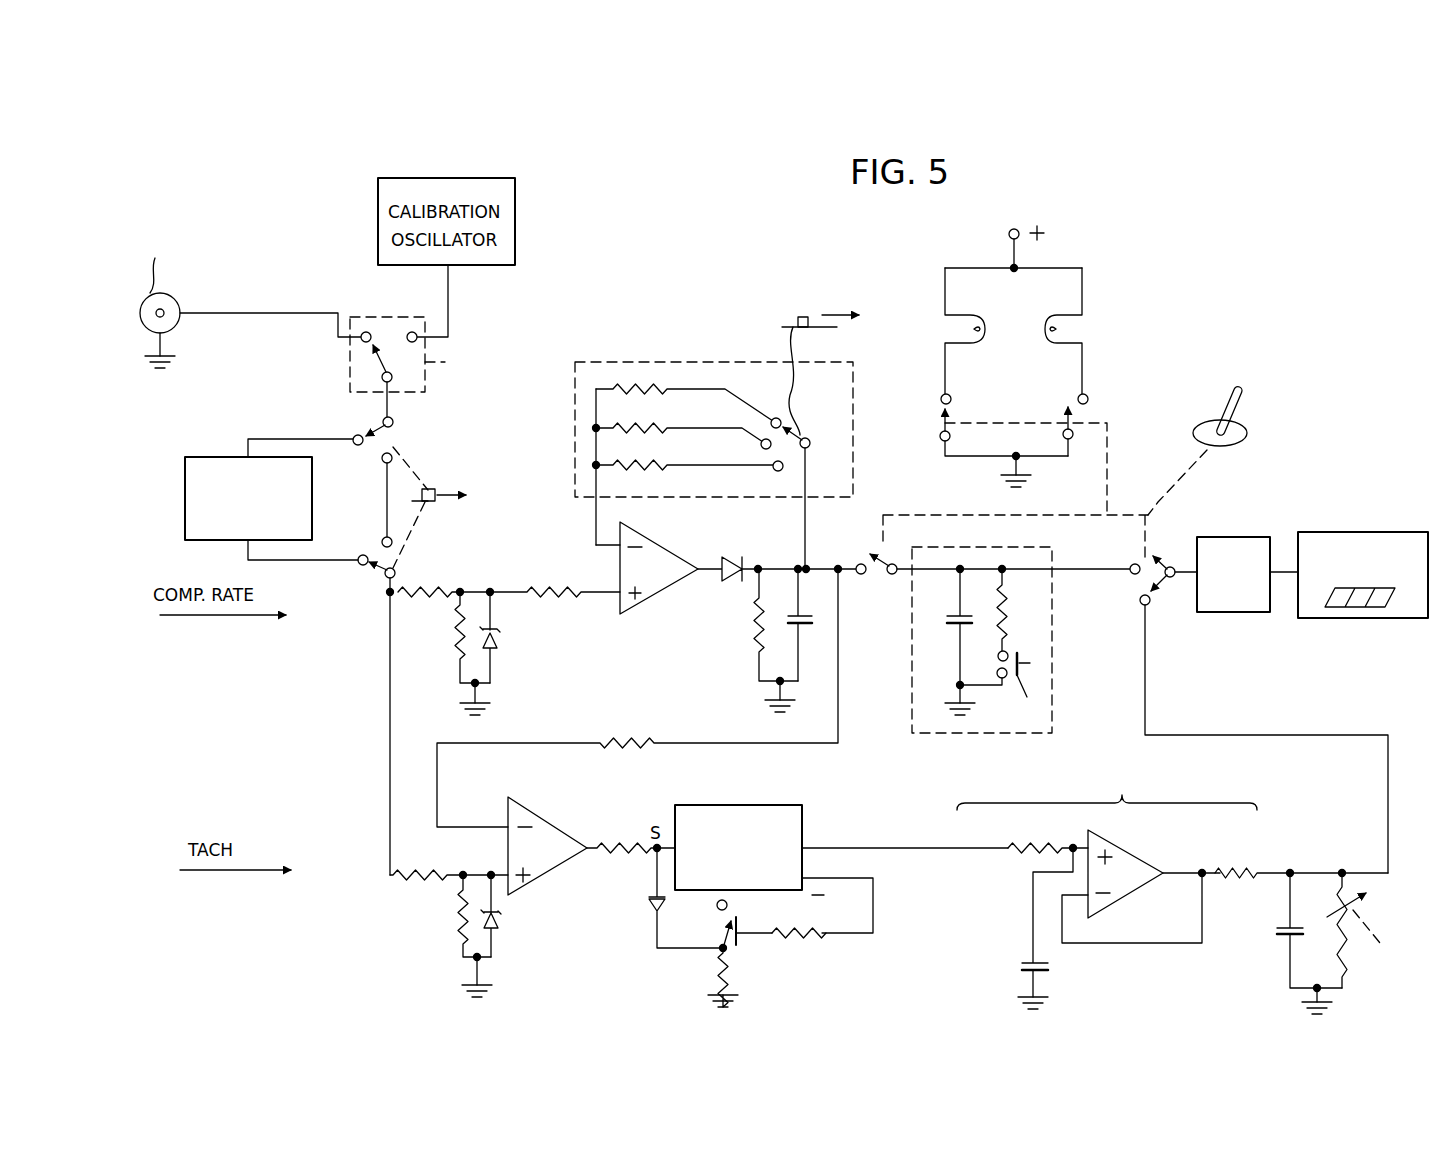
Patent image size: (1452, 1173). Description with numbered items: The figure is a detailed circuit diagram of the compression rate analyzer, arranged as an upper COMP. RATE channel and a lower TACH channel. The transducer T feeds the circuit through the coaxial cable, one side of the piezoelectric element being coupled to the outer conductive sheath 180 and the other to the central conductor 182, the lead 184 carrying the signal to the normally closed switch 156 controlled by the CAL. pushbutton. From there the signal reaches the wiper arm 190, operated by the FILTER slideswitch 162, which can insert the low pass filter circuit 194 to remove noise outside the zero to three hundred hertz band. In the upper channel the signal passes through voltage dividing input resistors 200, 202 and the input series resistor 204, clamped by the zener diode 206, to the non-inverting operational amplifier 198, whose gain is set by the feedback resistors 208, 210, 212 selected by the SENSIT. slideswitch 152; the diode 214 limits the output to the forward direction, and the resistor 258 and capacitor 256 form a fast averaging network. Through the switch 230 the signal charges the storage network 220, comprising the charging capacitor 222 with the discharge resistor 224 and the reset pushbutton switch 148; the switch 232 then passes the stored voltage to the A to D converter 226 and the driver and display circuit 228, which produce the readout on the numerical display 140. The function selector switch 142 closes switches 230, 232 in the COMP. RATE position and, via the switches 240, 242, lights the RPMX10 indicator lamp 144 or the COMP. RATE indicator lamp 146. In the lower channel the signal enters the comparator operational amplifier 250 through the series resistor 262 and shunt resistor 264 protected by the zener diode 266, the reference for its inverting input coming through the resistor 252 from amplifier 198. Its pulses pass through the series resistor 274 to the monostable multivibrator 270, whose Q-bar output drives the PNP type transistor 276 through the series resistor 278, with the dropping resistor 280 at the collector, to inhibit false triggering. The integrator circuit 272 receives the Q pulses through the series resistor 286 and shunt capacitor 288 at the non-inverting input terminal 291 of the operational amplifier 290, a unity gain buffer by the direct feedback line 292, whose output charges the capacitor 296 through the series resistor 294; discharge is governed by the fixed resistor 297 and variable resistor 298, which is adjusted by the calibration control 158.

The outer conductive sheath 180 is at (143, 328).
The central conductor 182 is at (165, 311).
The sensor lead 184 is at (300, 312).
The switch 156 is at (376, 358).
The wiper arm 190 is at (393, 433).
The low pass filter circuit 194 is at (218, 456).
The FILTER slideswitch 162 is at (432, 488).
The voltage dividing input resistor 200 is at (415, 589).
The voltage dividing input resistor 202 is at (457, 641).
The input series resistor 204 is at (540, 588).
The zener diode 206 is at (498, 640).
The operational amplifier 198 is at (660, 593).
The feedback resistor 208 is at (657, 389).
The feedback resistor 210 is at (648, 428).
The feedback resistor 212 is at (648, 465).
The diode 214 is at (735, 557).
The SENSIT. slideswitch 152 is at (829, 340).
The resistor 258 is at (756, 641).
The capacitor 256 is at (803, 636).
The resistor 252 is at (628, 740).
The switch 230 is at (877, 579).
The charging capacitor 222 is at (960, 625).
The resistor 224 is at (1008, 621).
The reset pushbutton switch 148 is at (999, 675).
The storage network 220 is at (1052, 697).
The RPMX10 indicator lamp 144 is at (960, 315).
The COMP. RATE indicator lamp 146 is at (1068, 315).
The single pole-single throw switch 240 is at (940, 418).
The single pole-single throw switch 242 is at (1082, 423).
The function selector switch 142 is at (1245, 393).
The switch 232 is at (1163, 549).
The A to D converter 226 is at (1248, 537).
The driver and display circuit 228 is at (1367, 532).
The numerical display 140 is at (1355, 609).
The operational amplifier 250 is at (552, 789).
The series resistor 262 is at (420, 880).
The shunt resistor 264 is at (460, 927).
The zener diode 266 is at (502, 921).
The series resistor 274 is at (623, 841).
The monostable multivibrator 270 is at (733, 805).
The PNP type transistor 276 is at (735, 949).
The series resistor 278 is at (820, 939).
The dropping resistor 280 is at (730, 973).
The integrator circuit 272 is at (1107, 790).
The series resistor 286 is at (1031, 845).
The non-inverting input terminal 291 is at (1073, 846).
The operational amplifier 290 is at (1138, 858).
The series resistor 294 is at (1233, 869).
The capacitor 296 is at (1280, 928).
The variable resistor 298 is at (1370, 886).
The calibration control 158 is at (1389, 927).
The fixed resistor 297 is at (1350, 966).
The shunt capacitor 288 is at (1028, 956).
The direct feedback line 292 is at (1137, 945).